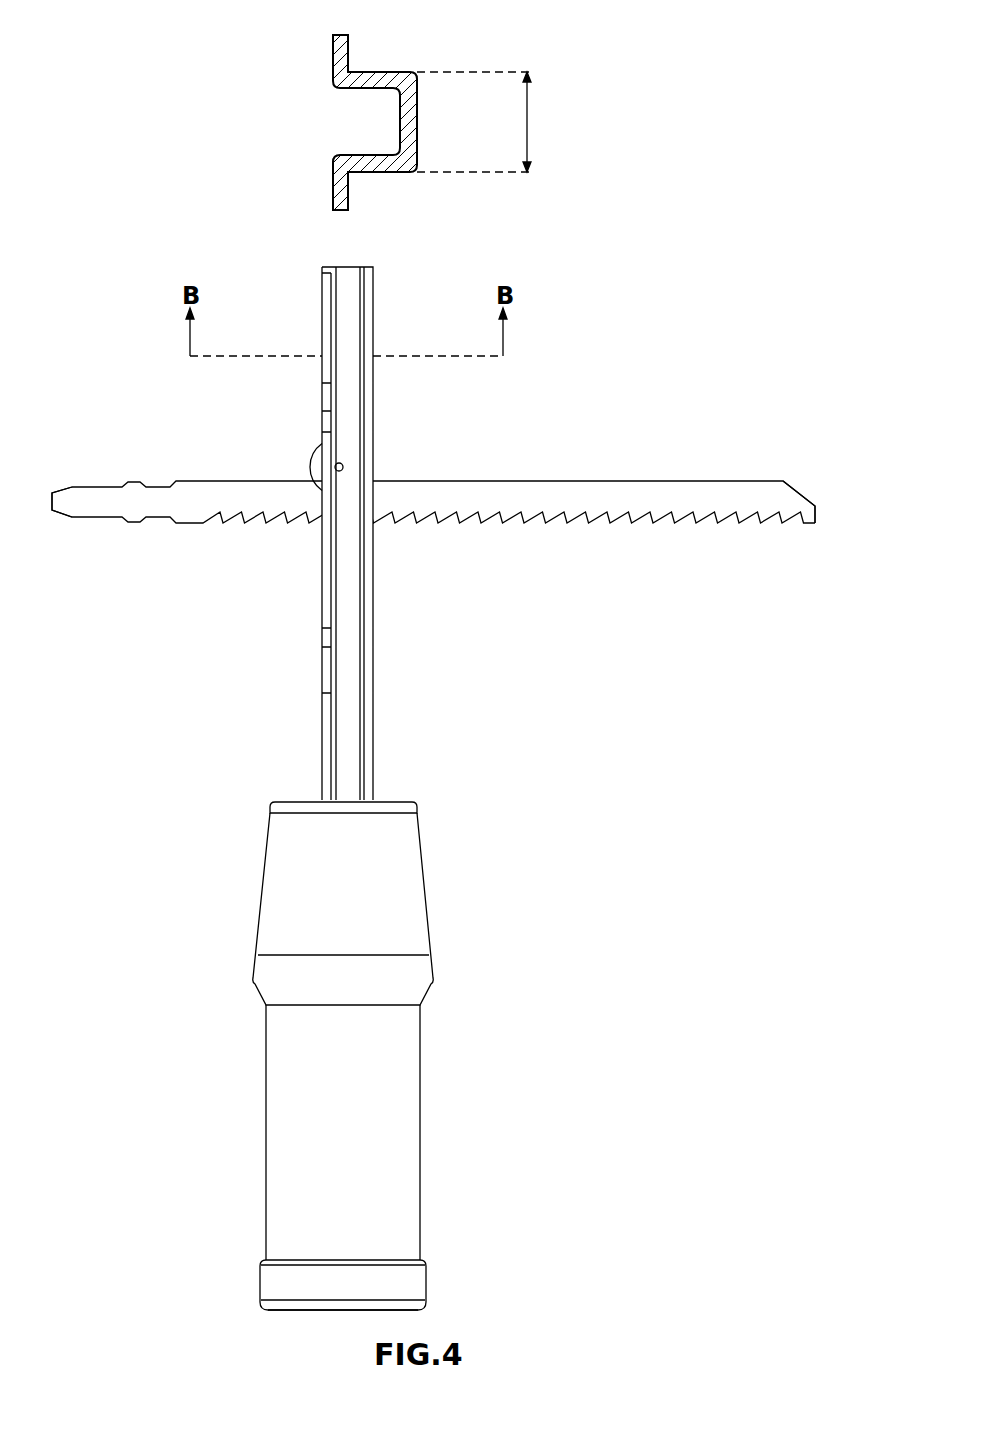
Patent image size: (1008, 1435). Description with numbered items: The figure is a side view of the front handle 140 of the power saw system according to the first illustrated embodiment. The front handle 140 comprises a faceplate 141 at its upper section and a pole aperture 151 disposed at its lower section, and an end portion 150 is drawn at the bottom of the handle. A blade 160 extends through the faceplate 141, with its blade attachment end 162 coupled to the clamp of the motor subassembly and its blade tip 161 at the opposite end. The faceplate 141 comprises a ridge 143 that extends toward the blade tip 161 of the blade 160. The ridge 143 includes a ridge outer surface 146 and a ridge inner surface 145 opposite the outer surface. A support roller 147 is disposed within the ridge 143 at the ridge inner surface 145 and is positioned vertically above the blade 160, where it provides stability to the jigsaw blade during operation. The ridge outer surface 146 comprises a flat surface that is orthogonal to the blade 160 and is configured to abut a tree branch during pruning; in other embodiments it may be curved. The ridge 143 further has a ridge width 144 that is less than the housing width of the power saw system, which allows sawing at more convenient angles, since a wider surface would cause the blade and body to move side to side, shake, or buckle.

The front handle 140 is at (406, 832).
The faceplate 141 is at (352, 611).
The ridge 143 is at (418, 75).
The ridge width 144 is at (529, 117).
The ridge inner surface 145 is at (399, 105).
The ridge outer surface 146 is at (416, 119).
The support roller 147 is at (315, 463).
The end cap 150 is at (426, 1282).
The pole aperture 151 is at (290, 1311).
The blade 160 is at (443, 492).
The blade tip 161 is at (800, 497).
The blade attachment end 162 is at (93, 494).